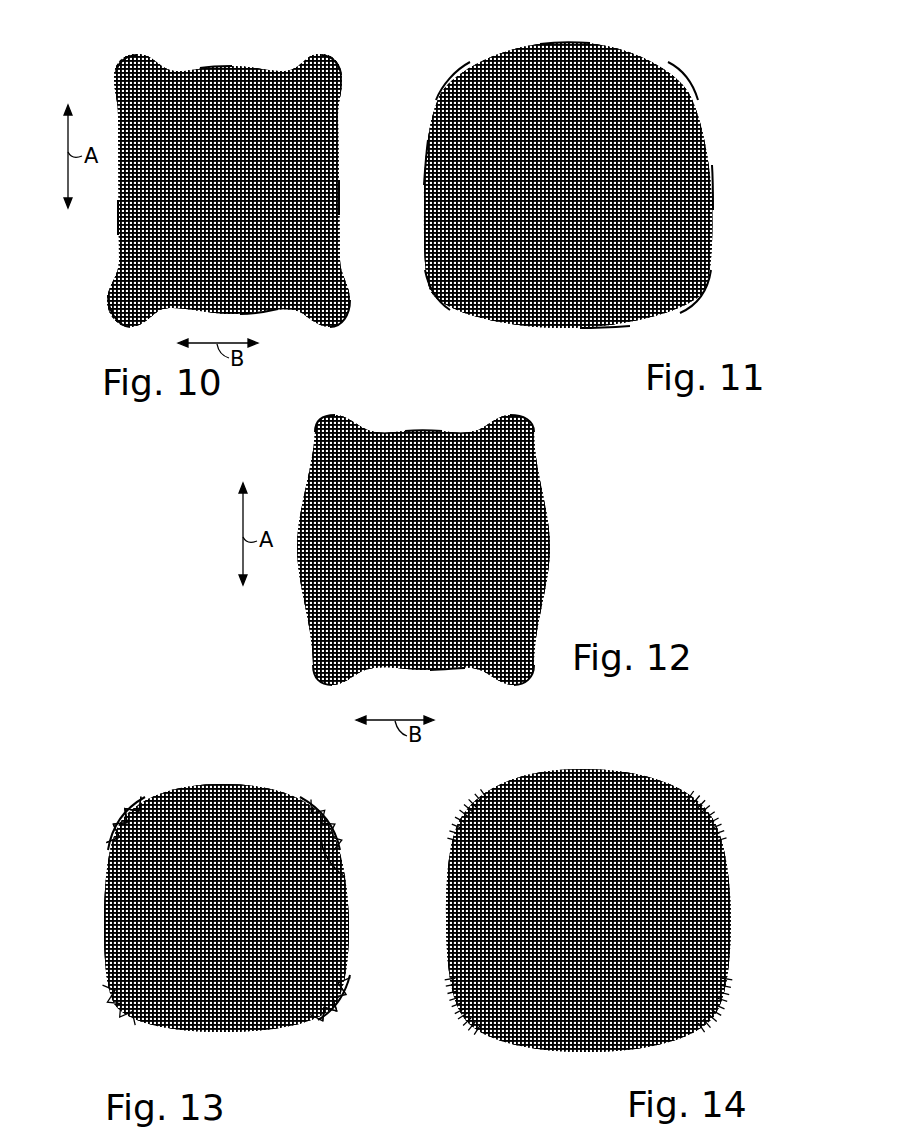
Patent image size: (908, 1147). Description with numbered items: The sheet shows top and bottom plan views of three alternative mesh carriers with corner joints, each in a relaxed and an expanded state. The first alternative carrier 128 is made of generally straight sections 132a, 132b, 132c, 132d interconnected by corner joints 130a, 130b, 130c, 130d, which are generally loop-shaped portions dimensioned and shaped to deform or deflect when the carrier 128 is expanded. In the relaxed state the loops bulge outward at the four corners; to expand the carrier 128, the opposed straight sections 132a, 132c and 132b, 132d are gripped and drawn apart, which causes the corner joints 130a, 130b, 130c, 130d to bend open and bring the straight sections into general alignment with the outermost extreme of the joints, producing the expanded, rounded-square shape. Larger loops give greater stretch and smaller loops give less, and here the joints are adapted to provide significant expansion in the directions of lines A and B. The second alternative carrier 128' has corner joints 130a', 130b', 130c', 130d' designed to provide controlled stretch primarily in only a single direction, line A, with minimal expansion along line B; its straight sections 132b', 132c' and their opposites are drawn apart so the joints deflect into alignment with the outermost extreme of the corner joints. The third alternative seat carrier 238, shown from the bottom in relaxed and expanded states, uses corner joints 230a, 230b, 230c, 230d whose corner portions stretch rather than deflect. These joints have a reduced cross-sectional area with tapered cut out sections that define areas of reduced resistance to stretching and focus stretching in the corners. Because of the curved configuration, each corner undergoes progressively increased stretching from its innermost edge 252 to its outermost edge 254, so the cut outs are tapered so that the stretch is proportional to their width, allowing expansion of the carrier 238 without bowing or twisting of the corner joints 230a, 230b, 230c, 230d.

In FIG. 10, the carrier 128 is at (228, 169).
In FIG. 11, the carrier 128 is at (597, 172).
In FIG. 12, the carrier 128' is at (473, 550).
In FIG. 10, the corner joint 130a is at (79, 54).
In FIG. 11, the corner joint 130a is at (441, 57).
In FIG. 10, the corner joint 130b is at (368, 55).
In FIG. 10, the corner joint 130c is at (377, 335).
In FIG. 10, the corner joint 130d is at (73, 323).
In FIG. 11, the corner joint 130d is at (428, 307).
In FIG. 12, the corner joint 130a' is at (341, 402).
In FIG. 12, the corner joint 130b' is at (529, 402).
In FIG. 12, the corner joint 130c' is at (563, 692).
In FIG. 12, the corner joint 130d' is at (277, 692).
In FIG. 10, the straight section 132a is at (117, 217).
In FIG. 11, the straight section 132a is at (423, 155).
In FIG. 10, the straight section 132b is at (194, 41).
In FIG. 11, the straight section 132b is at (591, 27).
In FIG. 10, the straight section 132c is at (369, 184).
In FIG. 11, the straight section 132c is at (743, 183).
In FIG. 10, the straight section 132d is at (263, 314).
In FIG. 11, the straight section 132d is at (607, 330).
In FIG. 12, the straight section 132b' is at (442, 402).
In FIG. 12, the straight section 132c' is at (477, 693).
In FIG. 13, the seat carrier 238 is at (72, 975).
In FIG. 14, the seat carrier 238 is at (750, 858).
In FIG. 13, the corner joint 230a is at (120, 808).
In FIG. 14, the corner joint 230a is at (477, 798).
In FIG. 13, the corner joint 230b is at (327, 813).
In FIG. 14, the corner joint 230b is at (705, 804).
In FIG. 13, the corner joint 230c is at (338, 1012).
In FIG. 14, the corner joint 230c is at (722, 1020).
In FIG. 13, the corner joint 230d is at (115, 1012).
In FIG. 14, the corner joint 230d is at (458, 1032).
In FIG. 13, the innermost edge 252 is at (345, 877).
In FIG. 13, the outermost edge 254 is at (320, 818).